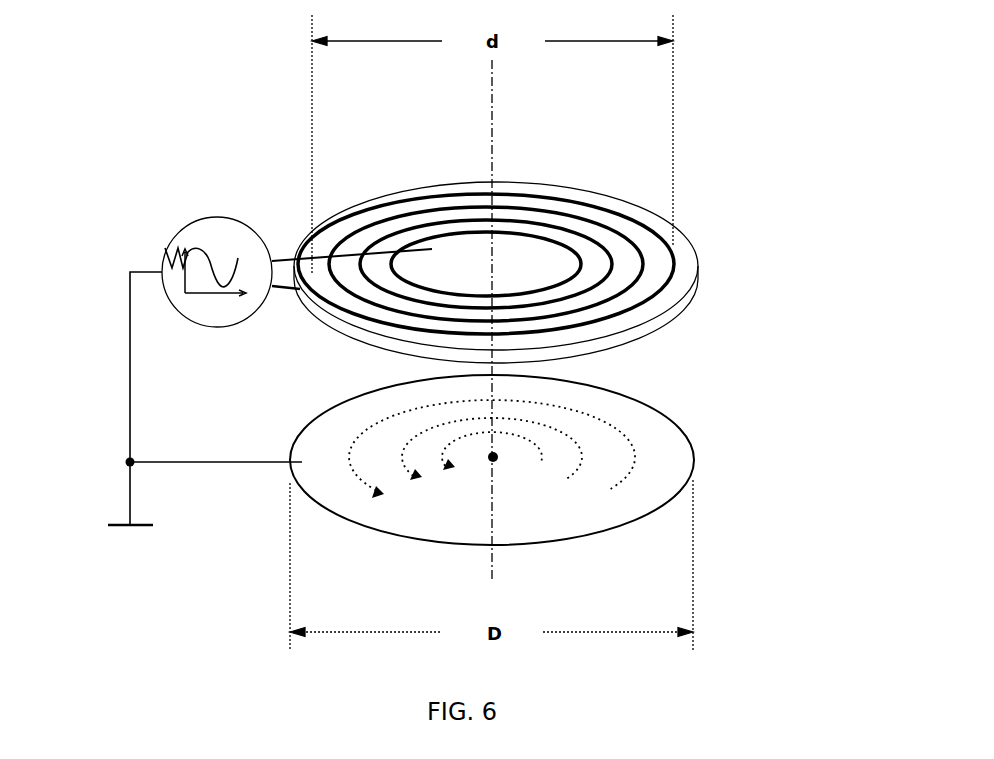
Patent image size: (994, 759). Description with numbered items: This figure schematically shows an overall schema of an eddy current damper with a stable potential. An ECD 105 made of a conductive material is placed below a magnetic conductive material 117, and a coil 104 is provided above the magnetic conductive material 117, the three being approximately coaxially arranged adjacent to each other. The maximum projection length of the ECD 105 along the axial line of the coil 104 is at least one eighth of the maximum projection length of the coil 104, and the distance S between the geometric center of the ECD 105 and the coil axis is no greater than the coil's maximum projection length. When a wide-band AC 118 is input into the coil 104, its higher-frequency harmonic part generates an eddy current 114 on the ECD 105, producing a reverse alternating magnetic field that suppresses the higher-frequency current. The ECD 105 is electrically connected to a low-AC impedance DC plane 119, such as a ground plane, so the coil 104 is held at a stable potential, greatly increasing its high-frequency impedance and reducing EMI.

The coil 104 is at (762, 219).
The eddy current damper (ECD) 105 is at (681, 444).
The eddy current 114 is at (631, 498).
The magnetic conductive material 117 is at (419, 174).
The wide-band AC 118 is at (192, 221).
The low-AC impedance DC plane 119 is at (105, 539).
The distance between the geometric center of the ECD and the axial line of the coil S is at (512, 480).